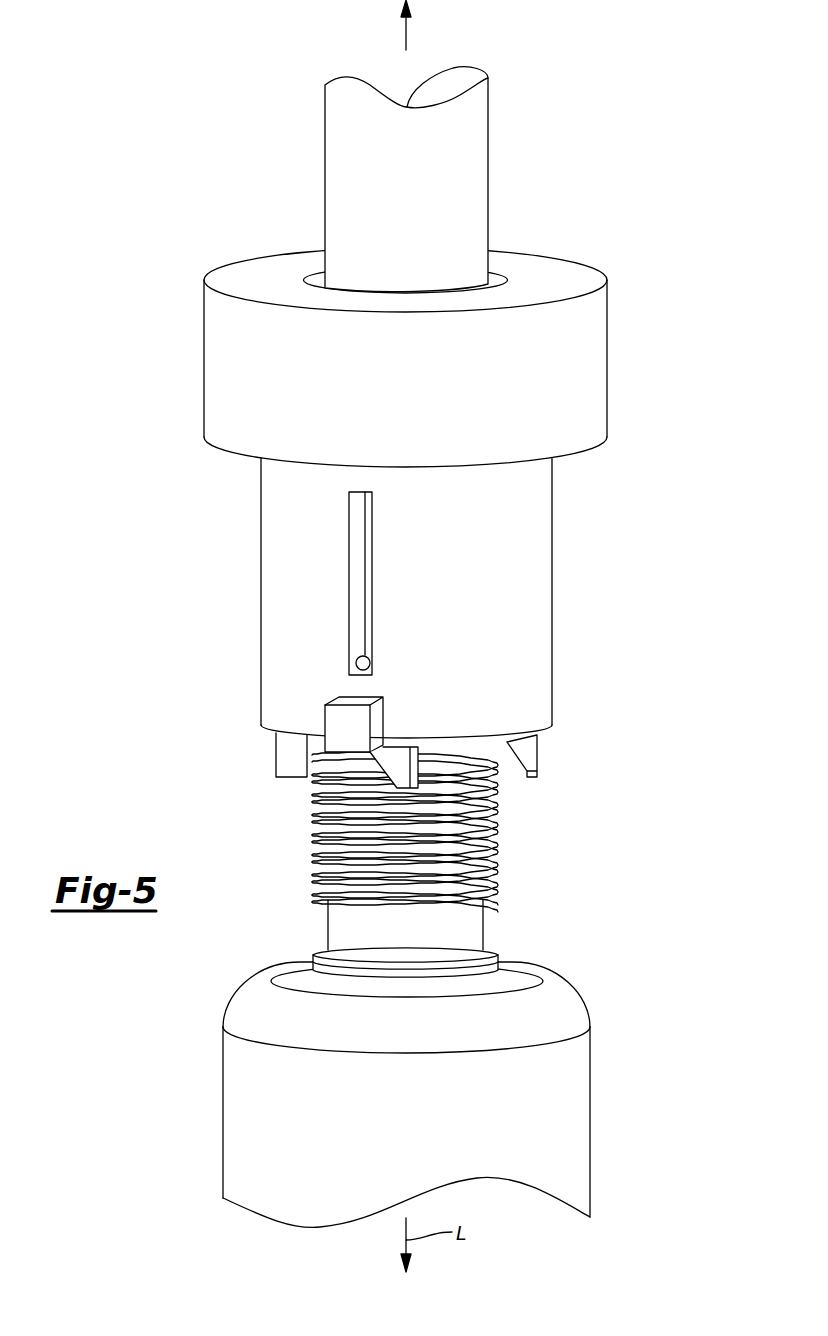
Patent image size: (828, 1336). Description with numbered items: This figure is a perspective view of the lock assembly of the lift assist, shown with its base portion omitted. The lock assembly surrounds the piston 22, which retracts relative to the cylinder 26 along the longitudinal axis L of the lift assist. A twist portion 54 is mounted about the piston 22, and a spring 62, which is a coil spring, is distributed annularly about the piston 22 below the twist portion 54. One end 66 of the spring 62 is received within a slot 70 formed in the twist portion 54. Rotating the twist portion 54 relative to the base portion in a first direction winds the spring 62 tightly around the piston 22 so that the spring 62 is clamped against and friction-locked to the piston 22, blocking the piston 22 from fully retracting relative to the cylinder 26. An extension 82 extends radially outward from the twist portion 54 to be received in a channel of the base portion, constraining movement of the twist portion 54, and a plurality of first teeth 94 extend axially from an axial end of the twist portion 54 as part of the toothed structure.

The piston 22 is at (460, 932).
The cylinder 26 is at (562, 1123).
The twist portion 54 is at (563, 363).
The spring 62 is at (337, 857).
The end of the spring 66 is at (353, 668).
The slot 70 is at (353, 547).
The extension 82 is at (352, 728).
The first teeth 94 is at (287, 757).